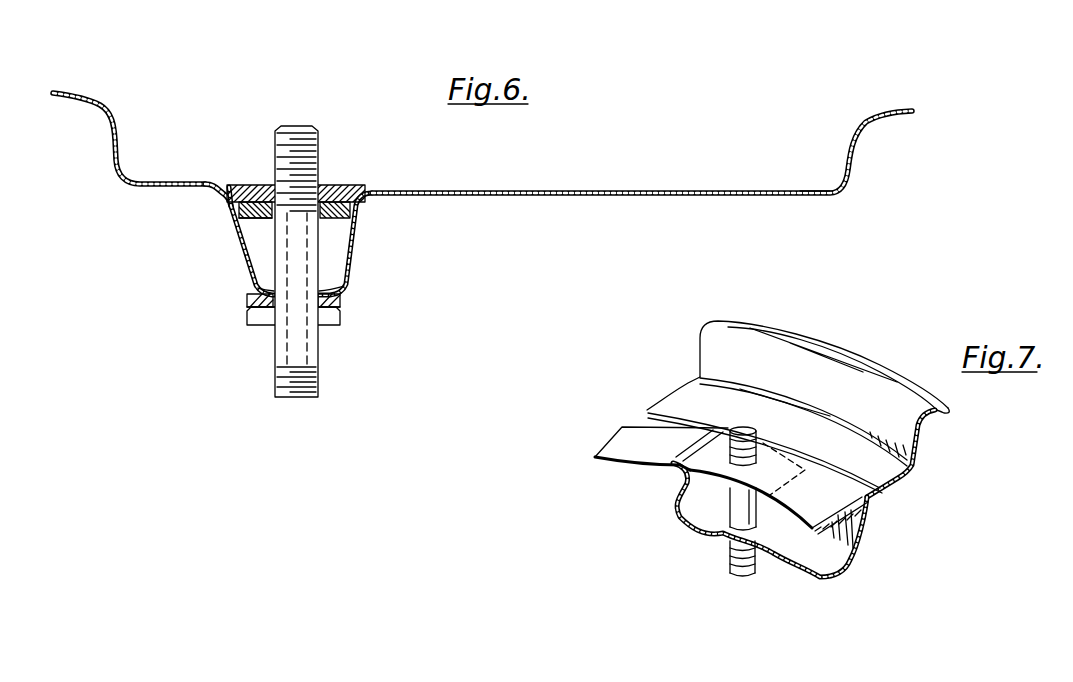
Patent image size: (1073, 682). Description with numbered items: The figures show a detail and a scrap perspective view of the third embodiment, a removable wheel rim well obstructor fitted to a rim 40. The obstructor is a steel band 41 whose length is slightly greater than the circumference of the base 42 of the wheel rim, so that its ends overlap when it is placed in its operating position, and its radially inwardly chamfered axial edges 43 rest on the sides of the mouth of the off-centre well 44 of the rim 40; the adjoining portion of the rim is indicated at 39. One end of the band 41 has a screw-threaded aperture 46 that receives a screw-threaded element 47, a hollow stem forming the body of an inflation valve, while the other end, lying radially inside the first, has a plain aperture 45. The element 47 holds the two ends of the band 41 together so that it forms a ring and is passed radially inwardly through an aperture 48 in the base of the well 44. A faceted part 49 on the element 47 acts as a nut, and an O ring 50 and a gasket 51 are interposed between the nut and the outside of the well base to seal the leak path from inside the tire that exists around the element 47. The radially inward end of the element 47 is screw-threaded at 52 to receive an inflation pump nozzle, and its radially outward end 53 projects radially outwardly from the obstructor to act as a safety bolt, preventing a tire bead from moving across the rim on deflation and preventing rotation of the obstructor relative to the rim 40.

In FIG. 6, the side flange of body panel 39 is at (117, 150).
In FIG. 6, the rim 40 is at (618, 206).
In FIG. 7, the rim 40 is at (895, 496).
In FIG. 6, the steel band 41 is at (263, 186).
In FIG. 7, the steel band 41 is at (627, 440).
In FIG. 6, the base of the wheel rim 42 is at (548, 190).
In FIG. 6, the chamfered axial edges 43 is at (199, 190).
In FIG. 6, the off-centre well 44 is at (357, 258).
In FIG. 7, the off-centre well 44 is at (842, 580).
In FIG. 6, the plain aperture 45 is at (270, 218).
In FIG. 6, the screw-threaded aperture 46 is at (322, 200).
In FIG. 6, the screw-threaded element 47 is at (312, 243).
In FIG. 7, the screw-threaded element 47 is at (737, 502).
In FIG. 6, the aperture 48 is at (340, 290).
In FIG. 6, the faceted part 49 is at (267, 323).
In FIG. 6, the O ring 50 is at (262, 312).
In FIG. 6, the gasket 51 is at (265, 303).
In FIG. 6, the screw-threaded radially inward end 52 is at (278, 376).
In FIG. 7, the screw-threaded radially inward end 52 is at (731, 562).
In FIG. 6, the radially outward end 53 is at (318, 147).
In FIG. 7, the radially outward end 53 is at (682, 475).